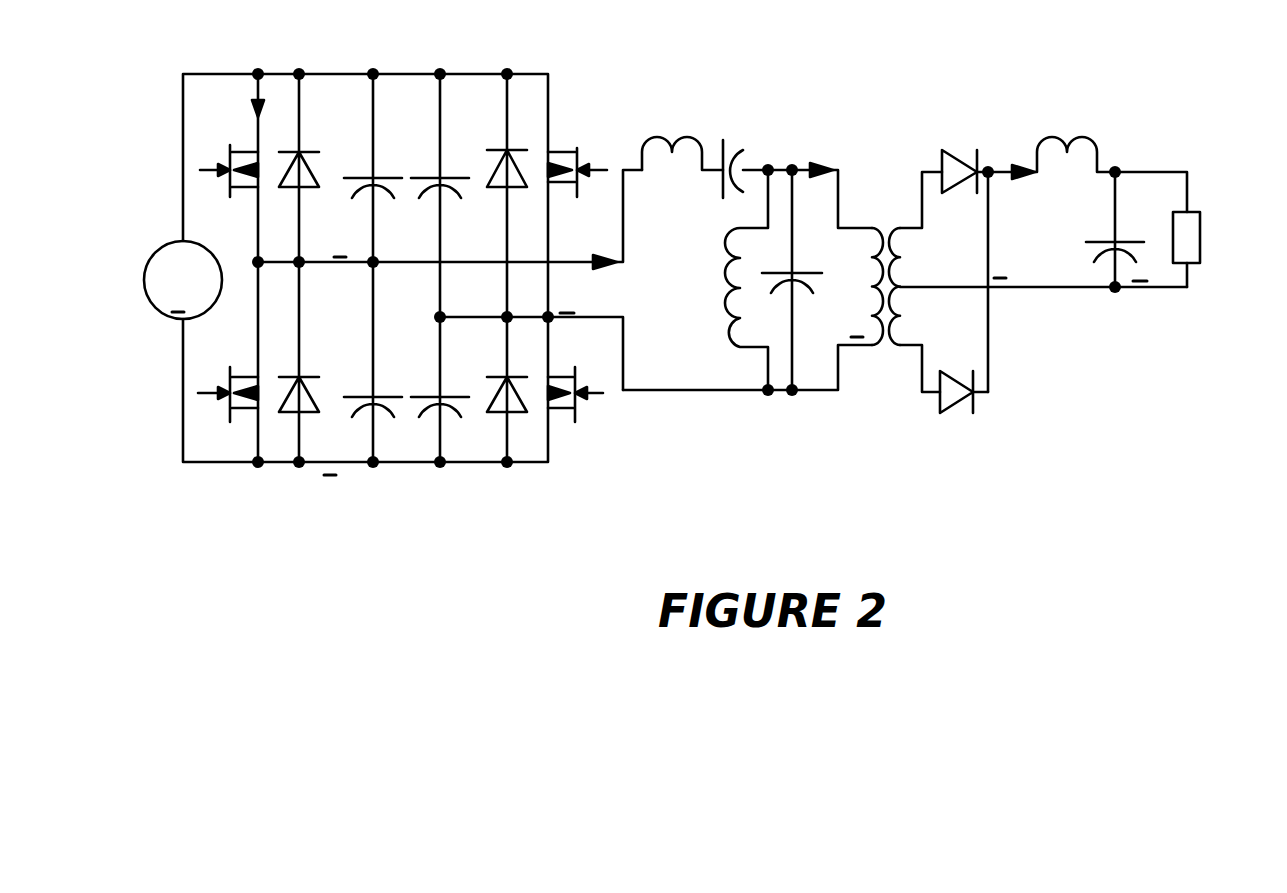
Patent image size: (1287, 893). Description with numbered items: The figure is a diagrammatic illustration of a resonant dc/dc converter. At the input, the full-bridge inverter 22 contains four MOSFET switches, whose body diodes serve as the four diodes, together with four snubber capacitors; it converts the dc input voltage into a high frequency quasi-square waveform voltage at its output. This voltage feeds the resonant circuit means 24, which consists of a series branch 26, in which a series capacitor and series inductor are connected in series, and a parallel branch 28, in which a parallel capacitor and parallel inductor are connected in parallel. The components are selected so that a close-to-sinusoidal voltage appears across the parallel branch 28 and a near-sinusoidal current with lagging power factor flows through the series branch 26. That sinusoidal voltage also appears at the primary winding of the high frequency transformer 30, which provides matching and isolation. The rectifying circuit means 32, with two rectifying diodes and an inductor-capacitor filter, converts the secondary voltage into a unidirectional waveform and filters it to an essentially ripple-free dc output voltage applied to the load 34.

The full-bridge inverter 22 is at (575, 488).
The resonant circuit means 24 is at (622, 415).
The series branch 26 is at (620, 90).
The parallel branch 28 is at (758, 157).
The high frequency transformer 30 is at (843, 435).
The rectifying circuit means 32 is at (943, 470).
The load 34 is at (1205, 200).